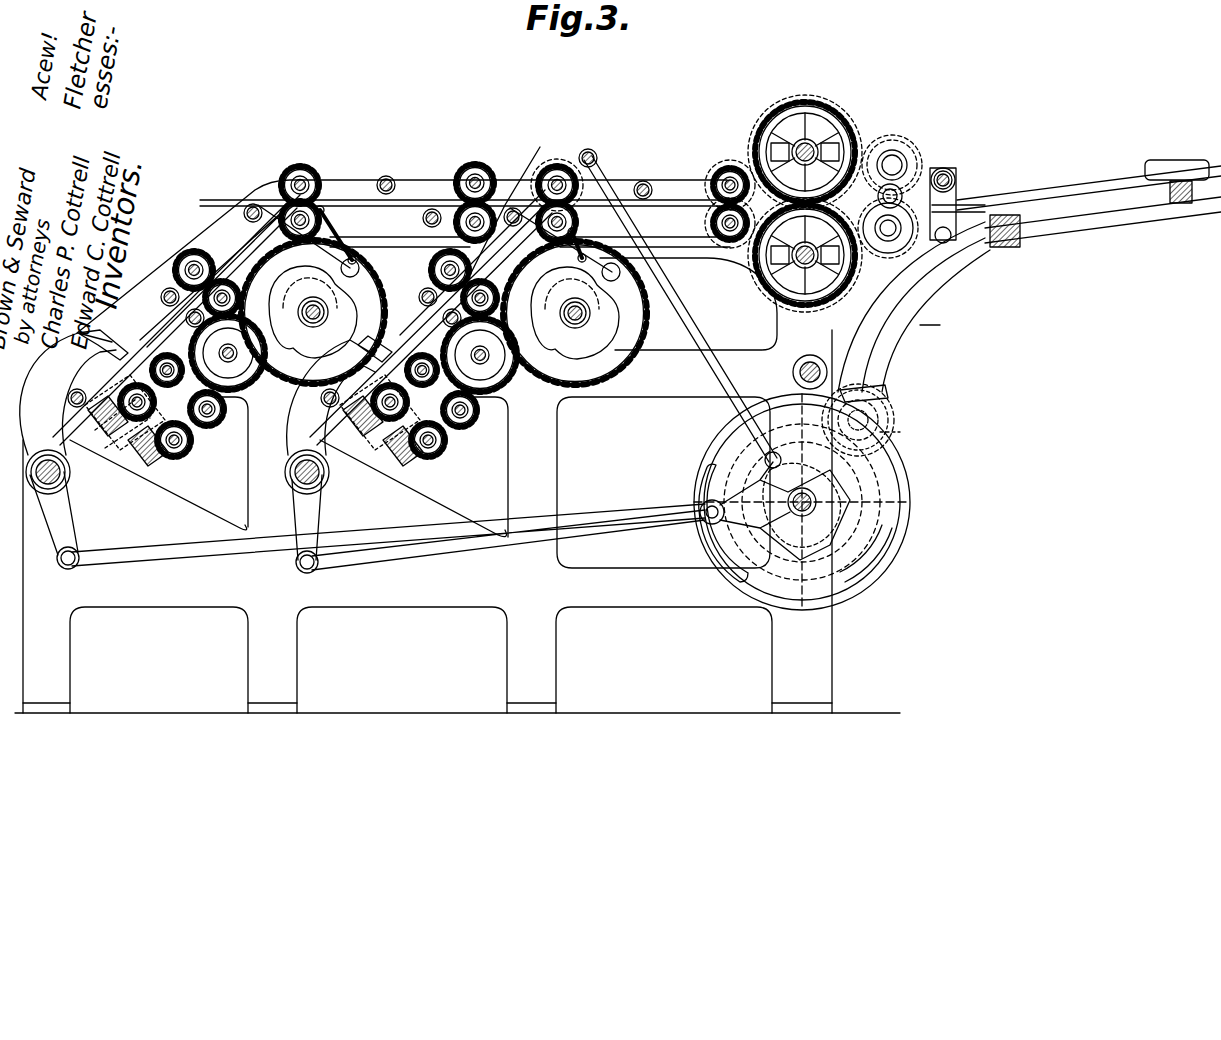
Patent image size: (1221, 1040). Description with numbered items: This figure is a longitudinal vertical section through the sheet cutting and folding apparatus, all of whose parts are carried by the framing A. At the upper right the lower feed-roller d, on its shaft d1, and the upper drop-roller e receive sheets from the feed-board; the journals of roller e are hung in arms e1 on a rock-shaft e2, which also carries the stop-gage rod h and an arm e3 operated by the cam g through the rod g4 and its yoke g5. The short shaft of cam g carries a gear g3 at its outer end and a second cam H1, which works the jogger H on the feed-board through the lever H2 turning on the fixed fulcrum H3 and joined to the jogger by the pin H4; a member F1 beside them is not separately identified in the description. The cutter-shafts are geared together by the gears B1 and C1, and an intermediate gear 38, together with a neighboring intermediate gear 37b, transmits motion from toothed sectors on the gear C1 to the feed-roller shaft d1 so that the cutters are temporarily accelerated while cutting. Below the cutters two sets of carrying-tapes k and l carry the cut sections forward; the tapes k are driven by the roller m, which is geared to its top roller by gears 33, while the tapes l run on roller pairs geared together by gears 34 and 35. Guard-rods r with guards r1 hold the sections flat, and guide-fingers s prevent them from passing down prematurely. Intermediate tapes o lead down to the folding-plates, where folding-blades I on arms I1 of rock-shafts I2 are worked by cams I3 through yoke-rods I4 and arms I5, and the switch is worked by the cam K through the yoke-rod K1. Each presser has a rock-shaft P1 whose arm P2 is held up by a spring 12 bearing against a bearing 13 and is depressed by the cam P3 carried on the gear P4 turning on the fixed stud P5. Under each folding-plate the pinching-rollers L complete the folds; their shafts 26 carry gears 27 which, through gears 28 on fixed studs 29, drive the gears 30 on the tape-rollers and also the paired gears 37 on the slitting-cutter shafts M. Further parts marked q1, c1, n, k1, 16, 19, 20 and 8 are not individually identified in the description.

The framing A is at (457, 446).
The gears 35 is at (298, 172).
The gear q1 is at (339, 220).
The gear 30 is at (250, 295).
The fixed stud 29 is at (354, 354).
The gear 28 is at (258, 388).
The roller shaft 26 is at (155, 368).
The gear 27 is at (396, 415).
The gears 37 is at (225, 410).
The shafts M is at (190, 440).
The guard-rods r is at (392, 177).
The guards r1 is at (543, 184).
The gears 34 is at (472, 168).
The guide-fingers s is at (514, 202).
The presser rock-shaft P1 is at (508, 197).
The gears 33 is at (575, 188).
The pin 20 is at (745, 195).
The pin 19 is at (715, 222).
The carrying-tapes k is at (656, 225).
The link 16 is at (633, 217).
The spring 12 is at (498, 228).
The bearing 13 is at (485, 214).
The link n is at (584, 240).
The carrying-tapes l is at (350, 235).
The tape-roller m is at (429, 243).
The cam-gear P4 is at (444, 312).
The presser-cam P3 is at (432, 288).
The fixed stud P5 is at (444, 311).
The cam follower c1 is at (388, 318).
The intermediate carrying-tapes o is at (521, 273).
The rock-shaft arm P2 is at (625, 275).
The yoke-rod K1 is at (680, 308).
The cutter-shaft gears C1 is at (830, 125).
The cutter-shaft gears B1 is at (828, 295).
The intermediate gear 38 is at (893, 160).
The upper feed-roller e is at (880, 200).
The lower feed-roller d is at (888, 240).
The feed-roller shaft d1 is at (880, 245).
The arms e1 is at (900, 180).
The rock-shaft e2 is at (955, 185).
The arm e3 is at (975, 192).
The intermediate gear 37b is at (927, 240).
The stop-gage rod h is at (940, 242).
The link k1 is at (980, 230).
The bar F1 is at (1060, 193).
The fixed fulcrum H3 is at (1018, 240).
The jogger H is at (1172, 162).
The pin H4 is at (1180, 205).
The lever H2 is at (914, 307).
The cam H1 is at (795, 378).
The cam g is at (890, 416).
The gear g3 is at (898, 430).
The rod g4 is at (925, 325).
The yoke g5 is at (888, 392).
The cams I3 is at (790, 548).
The cam K is at (785, 511).
The yoke-rods I4 is at (272, 555).
The arms I5 is at (70, 528).
The rock-shafts I2 is at (62, 482).
The arms I1 is at (55, 432).
The folding-blades I is at (78, 372).
The pinching-rollers L is at (365, 395).
The pin 8 is at (513, 186).